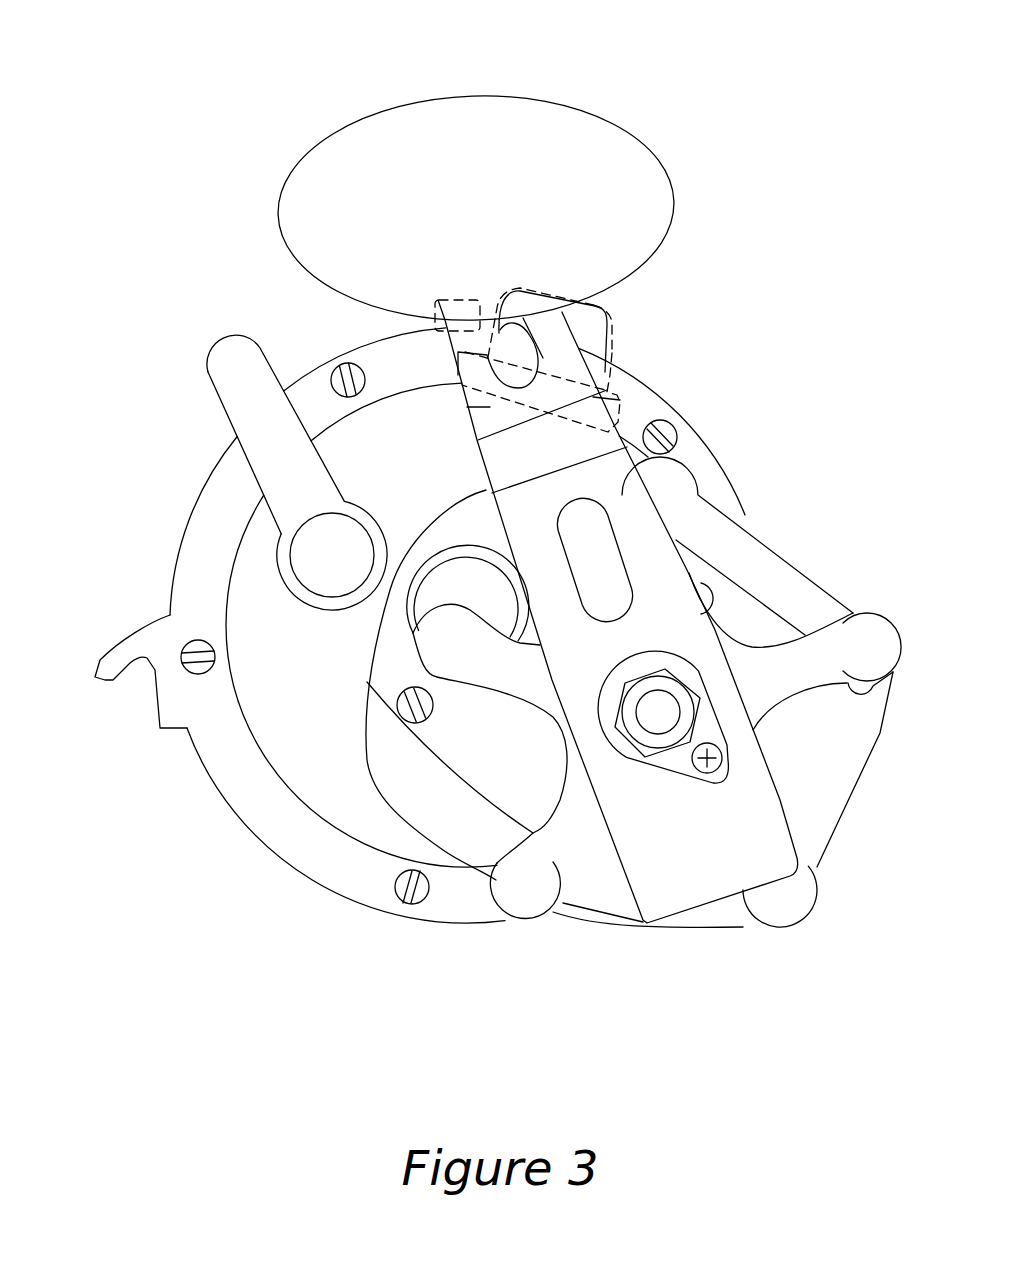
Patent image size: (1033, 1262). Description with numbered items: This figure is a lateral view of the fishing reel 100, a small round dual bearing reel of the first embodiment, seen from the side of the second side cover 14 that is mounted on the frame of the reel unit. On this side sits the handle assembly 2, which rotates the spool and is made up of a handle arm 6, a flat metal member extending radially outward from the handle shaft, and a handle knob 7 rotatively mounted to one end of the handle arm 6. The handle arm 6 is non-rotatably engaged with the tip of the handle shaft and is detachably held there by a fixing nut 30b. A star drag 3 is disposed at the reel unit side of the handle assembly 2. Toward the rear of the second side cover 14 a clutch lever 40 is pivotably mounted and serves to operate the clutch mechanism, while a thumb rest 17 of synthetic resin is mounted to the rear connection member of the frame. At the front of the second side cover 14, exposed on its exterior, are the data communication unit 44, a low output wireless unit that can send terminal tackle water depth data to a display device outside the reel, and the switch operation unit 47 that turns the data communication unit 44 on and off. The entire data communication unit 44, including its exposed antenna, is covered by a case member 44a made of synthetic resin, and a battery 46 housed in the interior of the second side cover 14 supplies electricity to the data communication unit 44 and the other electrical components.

The handle assembly 2 is at (618, 428).
The star drag 3 is at (683, 484).
The handle arm 6 is at (457, 385).
The handle knob 7 is at (425, 95).
The second side cover 14 is at (628, 402).
The thumb rest 17 is at (143, 643).
The fixing nut 30b is at (677, 690).
The clutch lever 40 is at (235, 380).
The data communication unit 44 is at (568, 349).
The case member 44a is at (616, 316).
The battery 46 is at (625, 330).
The switch operation unit 47 is at (452, 300).
The fishing reel 100 is at (768, 287).